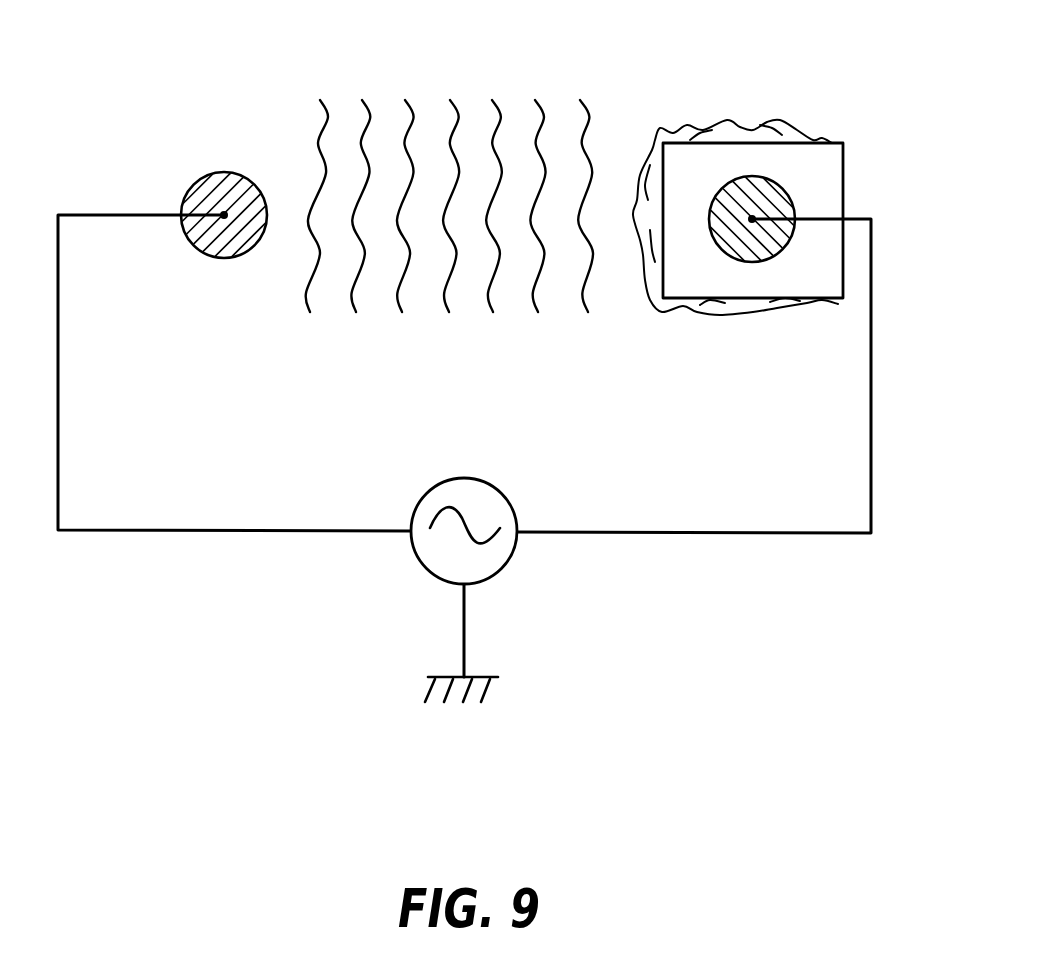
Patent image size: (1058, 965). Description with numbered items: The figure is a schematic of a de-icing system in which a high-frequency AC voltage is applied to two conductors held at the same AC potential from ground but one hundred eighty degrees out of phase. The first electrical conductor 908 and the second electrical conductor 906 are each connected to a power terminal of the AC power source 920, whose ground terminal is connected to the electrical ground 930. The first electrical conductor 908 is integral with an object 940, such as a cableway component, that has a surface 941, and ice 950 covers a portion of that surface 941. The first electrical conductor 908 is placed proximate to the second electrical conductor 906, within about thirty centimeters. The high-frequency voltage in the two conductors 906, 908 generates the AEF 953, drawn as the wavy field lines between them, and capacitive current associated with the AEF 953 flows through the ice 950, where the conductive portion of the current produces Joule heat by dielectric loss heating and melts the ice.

The second electrical conductor 906 is at (223, 172).
The first electrical conductor 908 is at (790, 195).
The AC power source 920 is at (485, 480).
The electrical ground 930 is at (485, 676).
The object 940 is at (693, 157).
The surface 941 is at (845, 163).
The ice 950 is at (755, 128).
The AEF 953 is at (451, 68).